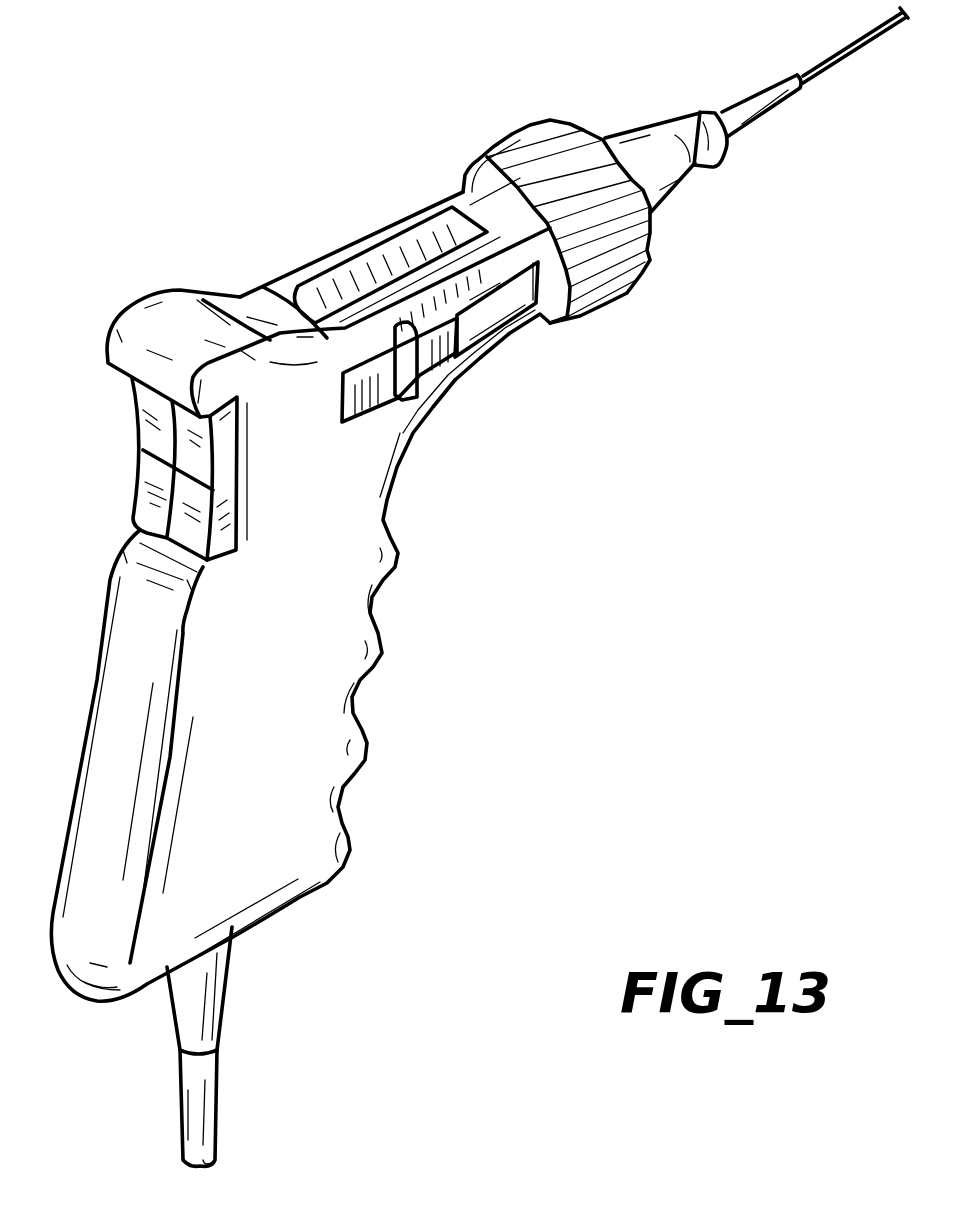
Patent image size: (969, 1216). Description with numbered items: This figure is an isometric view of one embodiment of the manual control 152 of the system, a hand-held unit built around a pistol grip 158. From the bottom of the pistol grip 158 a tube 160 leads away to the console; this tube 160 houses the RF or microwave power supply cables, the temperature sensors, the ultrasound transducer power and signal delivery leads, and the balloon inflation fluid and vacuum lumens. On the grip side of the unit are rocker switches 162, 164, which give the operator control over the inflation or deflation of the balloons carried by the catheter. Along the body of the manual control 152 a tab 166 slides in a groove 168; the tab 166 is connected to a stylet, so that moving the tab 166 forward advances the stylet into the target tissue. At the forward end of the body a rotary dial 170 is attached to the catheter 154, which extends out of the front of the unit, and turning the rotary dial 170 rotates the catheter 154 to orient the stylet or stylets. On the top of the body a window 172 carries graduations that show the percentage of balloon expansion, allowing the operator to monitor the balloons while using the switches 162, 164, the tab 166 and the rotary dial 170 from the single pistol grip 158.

The manual control 152 is at (419, 112).
The catheter 154 is at (830, 70).
The pistol grip 158 is at (303, 773).
The tube 160 is at (200, 1078).
The rocker switch 162 is at (140, 493).
The rocker switch 164 is at (220, 547).
The tab 166 is at (440, 375).
The groove 168 is at (530, 320).
The rotary dial 170 is at (650, 267).
The window 172 is at (337, 280).